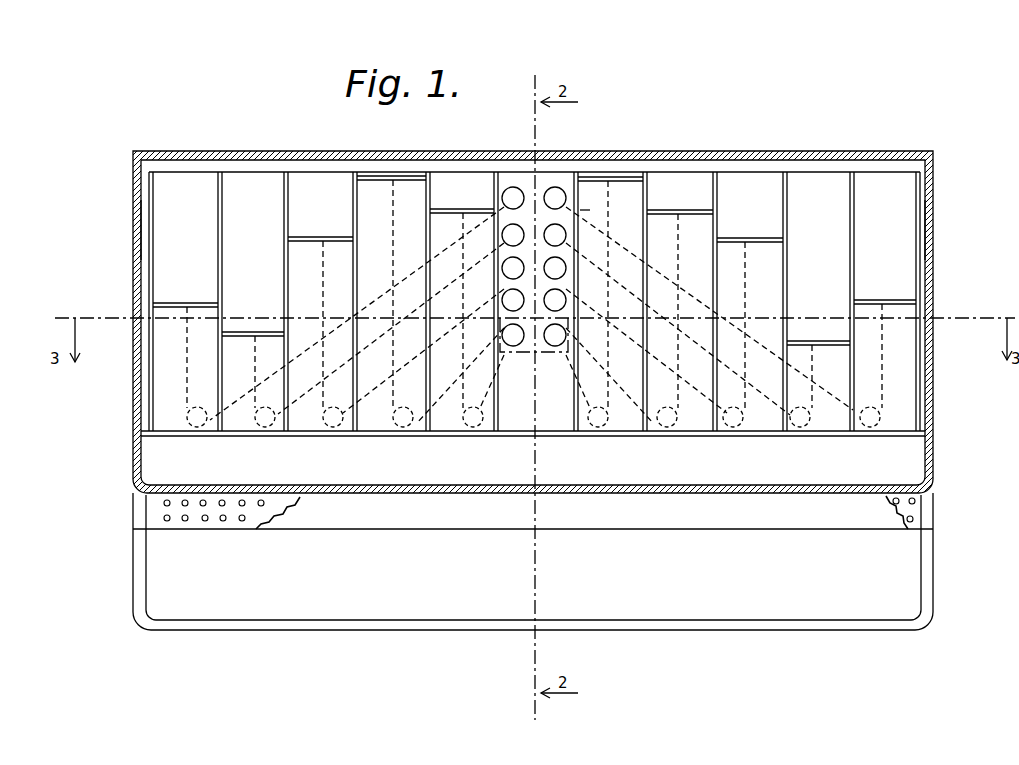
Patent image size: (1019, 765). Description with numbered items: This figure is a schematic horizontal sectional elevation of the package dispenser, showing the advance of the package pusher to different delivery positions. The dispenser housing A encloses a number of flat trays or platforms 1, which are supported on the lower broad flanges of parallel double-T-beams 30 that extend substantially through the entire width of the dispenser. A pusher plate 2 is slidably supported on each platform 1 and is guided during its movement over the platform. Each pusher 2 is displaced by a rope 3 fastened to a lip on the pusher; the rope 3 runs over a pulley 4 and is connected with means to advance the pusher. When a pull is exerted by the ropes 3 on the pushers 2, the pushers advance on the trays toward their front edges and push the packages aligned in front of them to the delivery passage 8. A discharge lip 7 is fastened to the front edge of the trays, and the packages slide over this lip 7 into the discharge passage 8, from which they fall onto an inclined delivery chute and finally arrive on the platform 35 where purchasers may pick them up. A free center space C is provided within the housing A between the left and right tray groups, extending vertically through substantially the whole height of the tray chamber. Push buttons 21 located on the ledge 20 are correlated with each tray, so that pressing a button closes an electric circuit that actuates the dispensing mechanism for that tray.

The platform 1 is at (681, 152).
The pusher plate 2 is at (180, 303).
The rope 3 is at (186, 403).
The pulley 4 is at (205, 428).
The discharge lip 7 is at (354, 434).
The delivery passage 8 is at (471, 477).
The ledge 20 is at (488, 520).
The push buttons 21 is at (206, 522).
The double-T-beams 30 is at (710, 258).
The platform 35 is at (742, 581).
The dispenser housing A is at (133, 228).
The free center space C is at (541, 358).